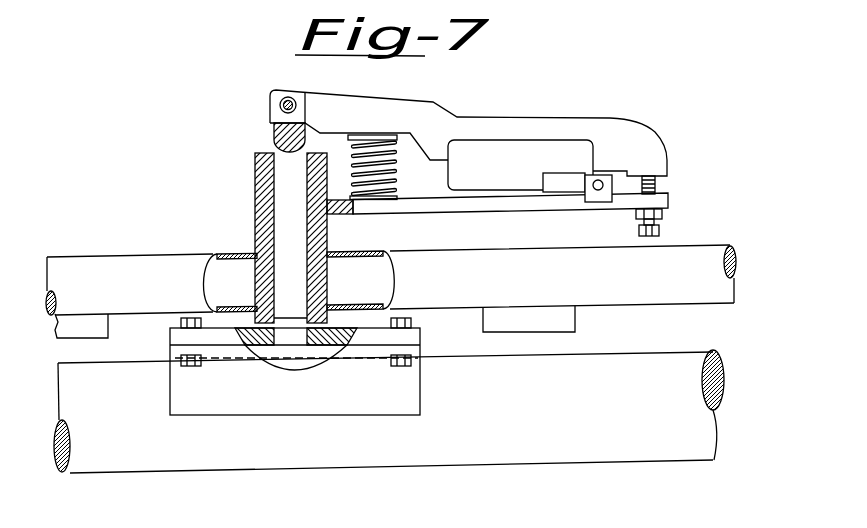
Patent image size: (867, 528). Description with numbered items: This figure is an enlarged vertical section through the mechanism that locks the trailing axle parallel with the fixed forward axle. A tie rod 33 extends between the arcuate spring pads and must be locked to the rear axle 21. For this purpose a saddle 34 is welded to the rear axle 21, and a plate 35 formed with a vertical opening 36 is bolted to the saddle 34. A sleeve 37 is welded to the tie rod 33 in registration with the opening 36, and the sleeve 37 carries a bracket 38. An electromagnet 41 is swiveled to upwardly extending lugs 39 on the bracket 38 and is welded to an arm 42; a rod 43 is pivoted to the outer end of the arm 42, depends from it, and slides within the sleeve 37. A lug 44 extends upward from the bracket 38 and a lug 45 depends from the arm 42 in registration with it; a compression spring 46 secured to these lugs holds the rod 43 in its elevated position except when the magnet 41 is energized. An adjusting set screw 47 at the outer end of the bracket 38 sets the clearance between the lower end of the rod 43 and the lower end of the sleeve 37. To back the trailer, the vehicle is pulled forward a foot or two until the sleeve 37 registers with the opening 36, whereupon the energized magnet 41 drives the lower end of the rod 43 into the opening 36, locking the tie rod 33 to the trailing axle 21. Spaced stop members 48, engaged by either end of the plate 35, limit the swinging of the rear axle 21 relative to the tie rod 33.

The rear axle 21 is at (118, 465).
The tie rod 33 is at (690, 300).
The saddle 34 is at (420, 380).
The plate 35 is at (422, 330).
The vertical opening 36 is at (309, 343).
The sleeve 37 is at (255, 186).
The bracket 38 is at (503, 205).
The upwardly extending lugs 39 is at (612, 172).
The electromagnet 41 is at (517, 179).
The arm 42 is at (592, 113).
The rod 43 is at (273, 132).
The lug 44 is at (394, 198).
The lug 45 is at (396, 137).
The compression spring 46 is at (395, 166).
The adjusting set screw 47 is at (660, 229).
The stop members 48 is at (108, 333).